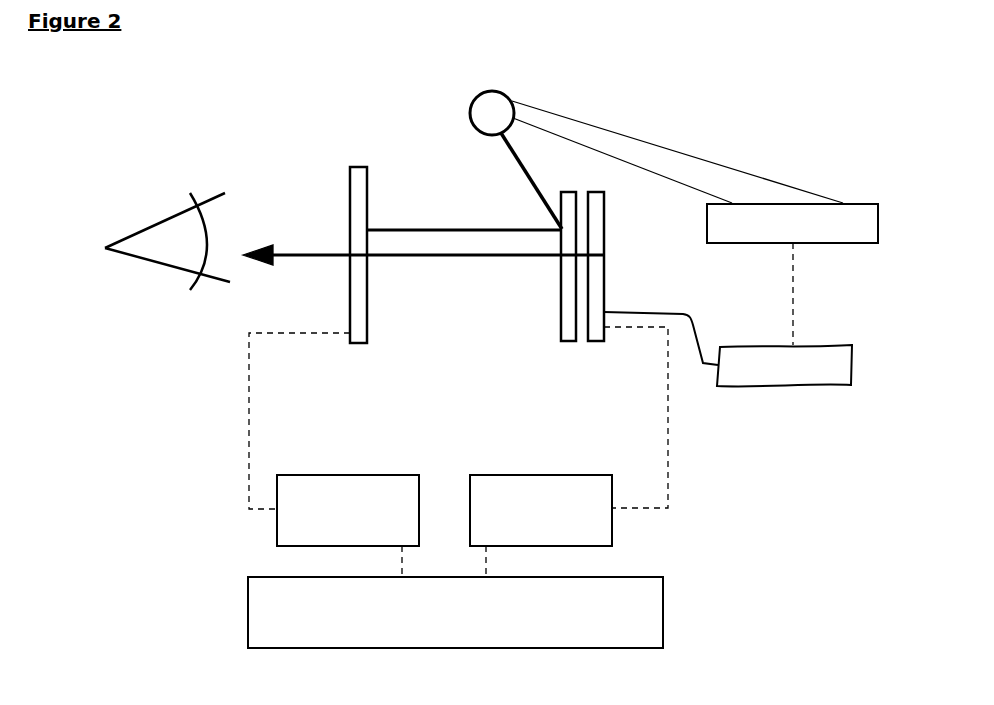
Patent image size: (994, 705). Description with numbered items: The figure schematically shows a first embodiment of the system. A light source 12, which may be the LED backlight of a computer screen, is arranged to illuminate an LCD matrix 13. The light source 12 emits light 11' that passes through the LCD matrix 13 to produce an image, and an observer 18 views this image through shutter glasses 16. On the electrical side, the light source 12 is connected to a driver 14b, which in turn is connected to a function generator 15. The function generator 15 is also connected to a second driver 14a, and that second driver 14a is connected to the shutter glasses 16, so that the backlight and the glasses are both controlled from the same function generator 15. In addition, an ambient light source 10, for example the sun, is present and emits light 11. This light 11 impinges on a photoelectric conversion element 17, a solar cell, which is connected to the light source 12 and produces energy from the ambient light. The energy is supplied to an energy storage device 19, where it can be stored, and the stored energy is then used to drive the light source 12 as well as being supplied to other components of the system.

The ambient light source 10 is at (508, 95).
The light 11 is at (605, 165).
The light 11' is at (423, 290).
The light source 12 is at (597, 262).
The LCD matrix 13 is at (570, 310).
The second driver 14a is at (382, 474).
The driver 14b is at (513, 473).
The function generator 15 is at (663, 602).
The shutter glasses 16 is at (367, 293).
The photoelectric conversion element 17 is at (828, 222).
The observer 18 is at (173, 210).
The energy storage device 19 is at (840, 338).